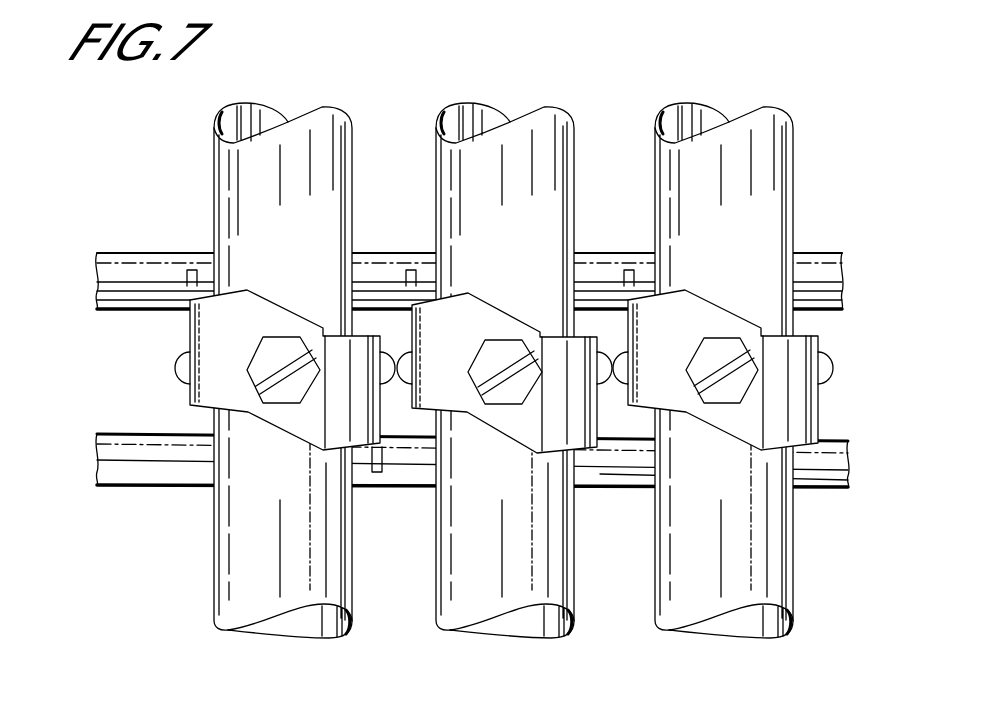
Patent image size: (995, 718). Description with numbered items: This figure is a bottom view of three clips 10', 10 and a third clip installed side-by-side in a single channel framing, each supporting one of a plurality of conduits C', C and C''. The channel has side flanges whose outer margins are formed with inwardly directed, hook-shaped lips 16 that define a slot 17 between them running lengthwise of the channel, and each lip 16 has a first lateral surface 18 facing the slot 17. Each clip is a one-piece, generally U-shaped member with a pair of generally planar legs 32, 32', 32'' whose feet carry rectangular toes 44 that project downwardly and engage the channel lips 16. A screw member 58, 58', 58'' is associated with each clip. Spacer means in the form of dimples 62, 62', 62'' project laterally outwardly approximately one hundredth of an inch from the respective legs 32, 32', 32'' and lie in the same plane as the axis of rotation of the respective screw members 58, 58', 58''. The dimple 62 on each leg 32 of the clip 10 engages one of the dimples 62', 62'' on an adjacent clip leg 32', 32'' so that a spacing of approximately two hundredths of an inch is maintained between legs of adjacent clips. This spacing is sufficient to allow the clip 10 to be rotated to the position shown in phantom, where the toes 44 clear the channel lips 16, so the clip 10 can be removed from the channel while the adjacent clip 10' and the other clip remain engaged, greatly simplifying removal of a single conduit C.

The conduit C' is at (313, 341).
The conduit C is at (518, 341).
The conduit C'' is at (748, 348).
The clip 10' is at (285, 328).
The clip 10 is at (517, 301).
The hook-shaped lip 16 is at (118, 257).
The slot 17 is at (150, 412).
The first lateral surface 18 is at (150, 252).
The leg 32 is at (492, 353).
The leg 32' is at (181, 425).
The leg 32'' is at (686, 391).
The toe 44 is at (410, 252).
The screw member 58 is at (501, 419).
The screw member 58' is at (293, 427).
The screw member 58'' is at (732, 427).
The dimple 62 is at (524, 282).
The dimple 62' is at (259, 428).
The dimple 62'' is at (760, 335).